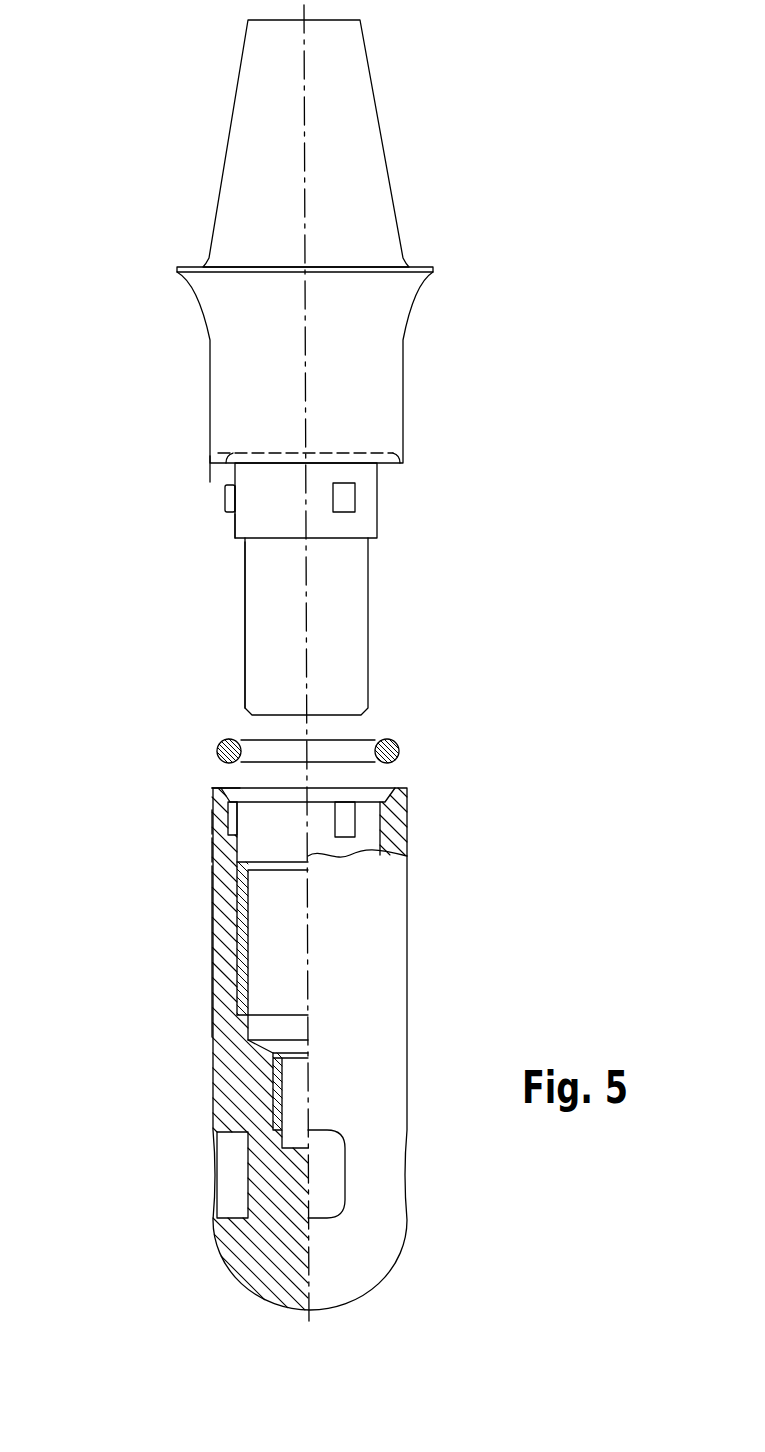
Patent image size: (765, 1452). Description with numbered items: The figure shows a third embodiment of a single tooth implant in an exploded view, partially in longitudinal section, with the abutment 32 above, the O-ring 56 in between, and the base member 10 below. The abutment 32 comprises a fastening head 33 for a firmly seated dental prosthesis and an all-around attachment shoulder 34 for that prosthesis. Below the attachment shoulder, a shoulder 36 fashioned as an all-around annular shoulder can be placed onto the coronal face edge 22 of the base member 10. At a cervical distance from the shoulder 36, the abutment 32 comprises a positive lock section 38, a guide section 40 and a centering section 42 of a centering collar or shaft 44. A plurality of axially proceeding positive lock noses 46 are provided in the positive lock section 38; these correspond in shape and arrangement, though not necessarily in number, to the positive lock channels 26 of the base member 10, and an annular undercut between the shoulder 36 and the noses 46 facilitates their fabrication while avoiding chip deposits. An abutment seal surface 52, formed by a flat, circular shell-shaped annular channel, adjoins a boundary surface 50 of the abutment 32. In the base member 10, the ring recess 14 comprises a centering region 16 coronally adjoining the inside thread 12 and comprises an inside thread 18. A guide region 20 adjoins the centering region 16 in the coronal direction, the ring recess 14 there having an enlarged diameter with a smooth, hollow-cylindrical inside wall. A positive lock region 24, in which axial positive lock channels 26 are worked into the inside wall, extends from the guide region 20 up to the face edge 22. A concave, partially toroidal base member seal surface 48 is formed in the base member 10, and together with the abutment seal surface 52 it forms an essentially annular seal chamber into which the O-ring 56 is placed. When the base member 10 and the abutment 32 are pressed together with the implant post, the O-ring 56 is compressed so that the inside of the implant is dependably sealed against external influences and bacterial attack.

The base member 10 is at (142, 1064).
The inside thread 12 is at (272, 1088).
The ring recess 14 is at (260, 994).
The centering region 16 is at (198, 866).
The inside thread 18 is at (240, 900).
The guide region 20 is at (196, 838).
The face edge 22 is at (405, 790).
The positive lock region 24 is at (196, 810).
The positive lock channels 26 is at (230, 816).
The abutment 32 is at (436, 336).
The fastening head 33 is at (360, 126).
The attachment shoulder 34 is at (427, 270).
The shoulder 36 is at (400, 464).
The positive lock section 38 is at (196, 486).
The guide section 40 is at (196, 514).
The centering section 42 is at (196, 542).
The centering collar 44 is at (357, 668).
The positive lock noses 46 is at (231, 506).
The base member seal surface 48 is at (233, 788).
The boundary surface 50 is at (196, 456).
The abutment seal surface 52 is at (398, 457).
The O-ring 56 is at (399, 750).